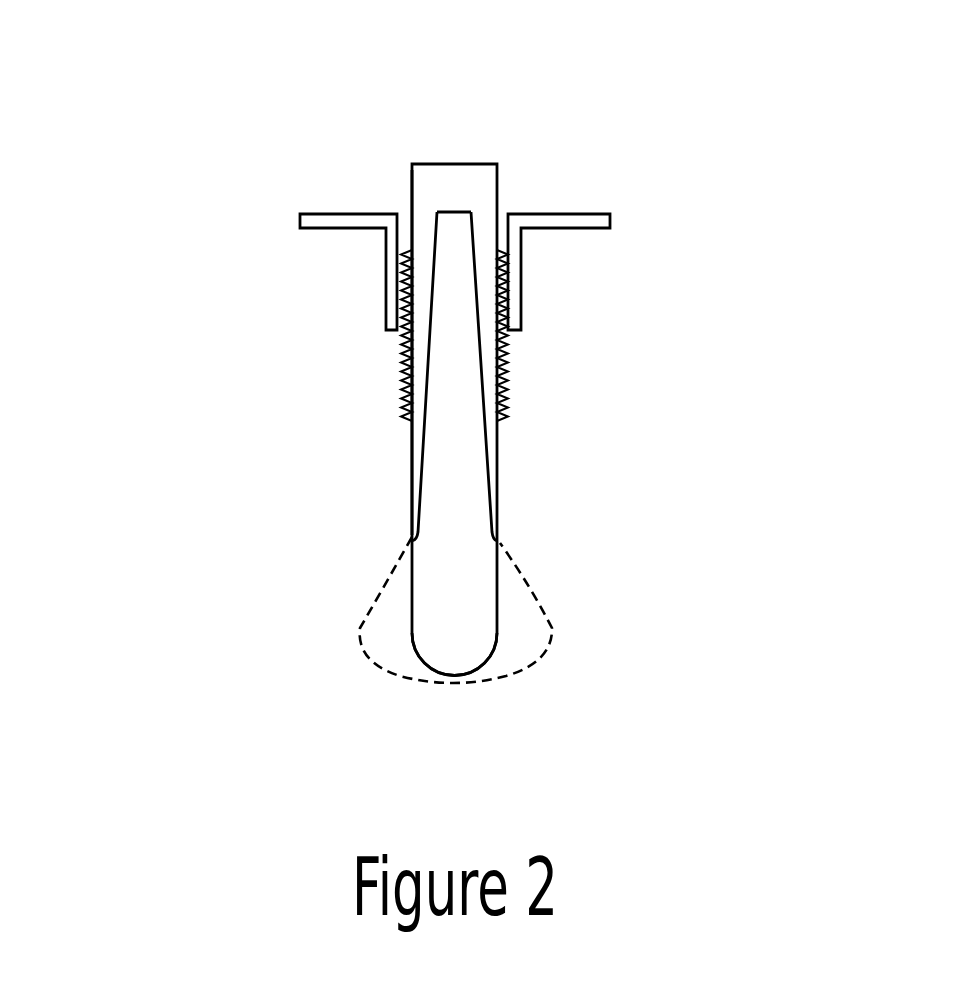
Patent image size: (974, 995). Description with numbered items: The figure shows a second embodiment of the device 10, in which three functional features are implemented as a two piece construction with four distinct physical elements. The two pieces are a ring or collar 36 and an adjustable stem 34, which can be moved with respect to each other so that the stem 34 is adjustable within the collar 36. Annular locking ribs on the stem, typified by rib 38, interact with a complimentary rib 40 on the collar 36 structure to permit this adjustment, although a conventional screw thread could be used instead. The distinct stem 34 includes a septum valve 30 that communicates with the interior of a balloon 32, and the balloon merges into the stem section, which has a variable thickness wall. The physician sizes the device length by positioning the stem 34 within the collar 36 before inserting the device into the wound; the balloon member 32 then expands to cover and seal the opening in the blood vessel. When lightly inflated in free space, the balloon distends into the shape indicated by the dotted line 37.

The device 10 is at (757, 260).
The septum valve 30 is at (453, 212).
The balloon 32 is at (495, 638).
The adjustable stem 34 is at (422, 325).
The collar 36 is at (340, 218).
The dotted line 37 is at (537, 600).
The annular locking rib 38 is at (500, 395).
The complimentary rib 40 is at (503, 290).